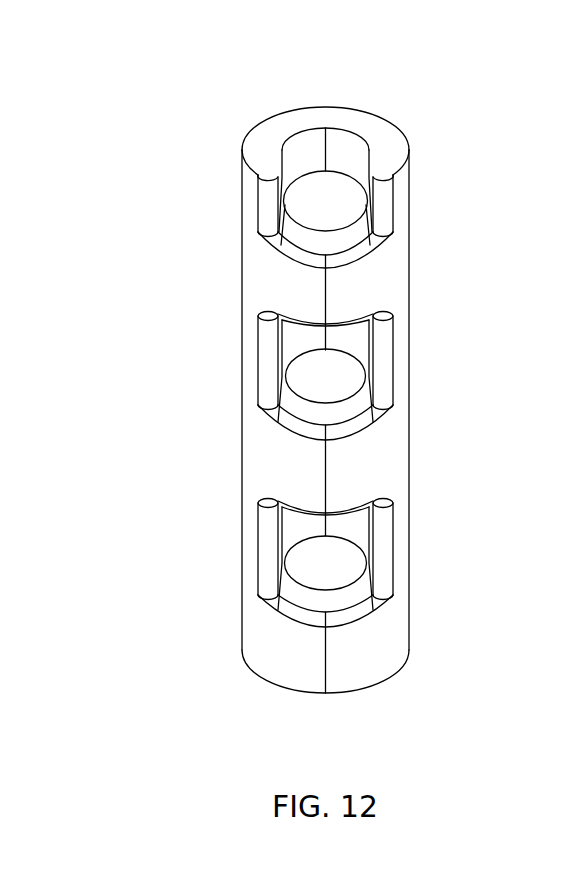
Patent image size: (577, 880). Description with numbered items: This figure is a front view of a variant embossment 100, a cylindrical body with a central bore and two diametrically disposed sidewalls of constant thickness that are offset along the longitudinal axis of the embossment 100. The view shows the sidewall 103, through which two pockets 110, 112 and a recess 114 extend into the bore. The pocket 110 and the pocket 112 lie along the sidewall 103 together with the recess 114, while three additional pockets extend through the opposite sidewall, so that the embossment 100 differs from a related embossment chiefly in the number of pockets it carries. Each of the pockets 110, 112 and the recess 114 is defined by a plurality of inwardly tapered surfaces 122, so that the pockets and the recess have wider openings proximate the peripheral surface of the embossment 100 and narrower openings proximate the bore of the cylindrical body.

The embossment 100 is at (343, 390).
The sidewall 103 is at (267, 664).
The pocket 110 is at (323, 372).
The pocket 112 is at (323, 559).
The recess 114 is at (312, 201).
The inwardly tapered surfaces 122 is at (336, 244).